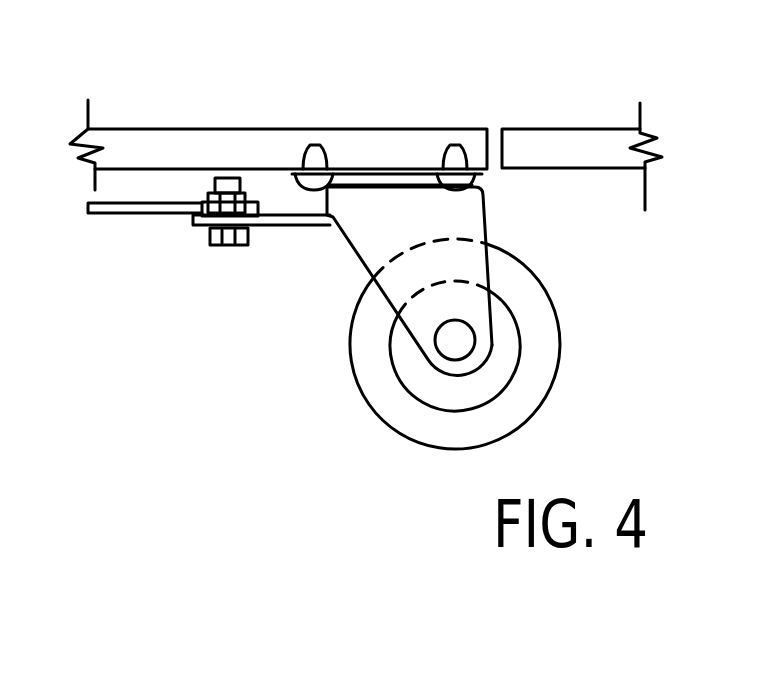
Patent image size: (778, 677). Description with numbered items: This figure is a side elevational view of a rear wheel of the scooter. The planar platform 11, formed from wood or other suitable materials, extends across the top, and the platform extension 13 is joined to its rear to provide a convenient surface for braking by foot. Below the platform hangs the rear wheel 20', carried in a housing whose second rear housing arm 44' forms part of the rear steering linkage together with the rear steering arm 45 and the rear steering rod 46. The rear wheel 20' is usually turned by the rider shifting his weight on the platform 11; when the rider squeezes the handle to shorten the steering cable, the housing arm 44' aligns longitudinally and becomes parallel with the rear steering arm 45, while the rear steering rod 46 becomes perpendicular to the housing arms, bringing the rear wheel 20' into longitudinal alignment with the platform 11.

The planar platform 11 is at (252, 128).
The platform extension 13 is at (577, 128).
The rear wheel 20' is at (495, 297).
The second rear housing arm 44' is at (261, 285).
The rear steering arm 45 is at (143, 212).
The rear steering rod 46 is at (196, 214).